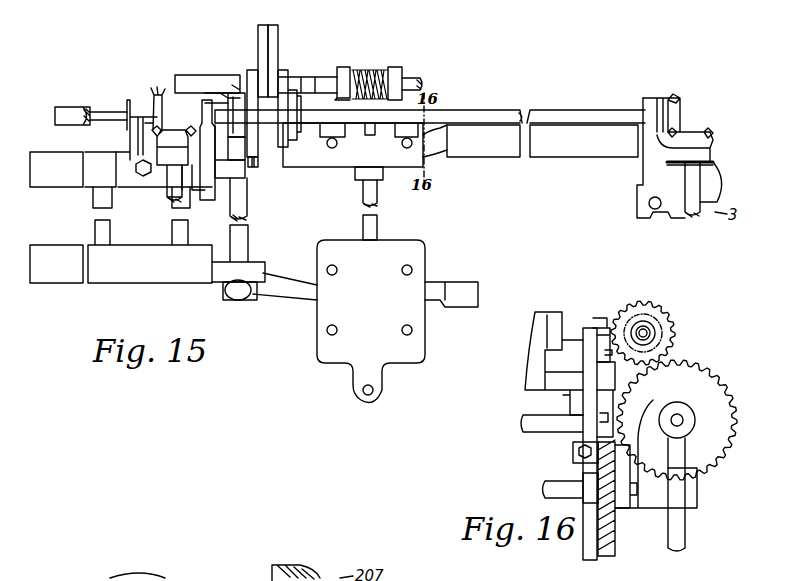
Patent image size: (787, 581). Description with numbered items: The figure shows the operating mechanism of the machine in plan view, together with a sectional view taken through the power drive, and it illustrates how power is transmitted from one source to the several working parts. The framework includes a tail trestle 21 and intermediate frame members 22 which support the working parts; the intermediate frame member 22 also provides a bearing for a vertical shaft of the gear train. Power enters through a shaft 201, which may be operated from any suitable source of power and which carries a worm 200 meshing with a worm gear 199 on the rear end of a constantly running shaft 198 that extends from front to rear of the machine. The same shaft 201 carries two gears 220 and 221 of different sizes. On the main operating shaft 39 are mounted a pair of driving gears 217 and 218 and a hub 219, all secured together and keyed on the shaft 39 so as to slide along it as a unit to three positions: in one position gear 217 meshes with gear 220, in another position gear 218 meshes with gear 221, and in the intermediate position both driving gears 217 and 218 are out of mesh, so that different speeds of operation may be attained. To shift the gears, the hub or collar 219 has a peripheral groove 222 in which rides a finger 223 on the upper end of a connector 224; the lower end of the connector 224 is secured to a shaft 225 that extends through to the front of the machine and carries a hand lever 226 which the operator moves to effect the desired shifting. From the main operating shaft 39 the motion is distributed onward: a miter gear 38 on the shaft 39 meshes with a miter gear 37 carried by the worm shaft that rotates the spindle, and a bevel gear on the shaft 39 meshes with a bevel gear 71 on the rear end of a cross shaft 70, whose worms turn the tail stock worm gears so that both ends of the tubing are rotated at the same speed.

In FIG. 15, the tail trestle 21 is at (135, 280).
In FIG. 15, the intermediate frame member 22 is at (425, 348).
In FIG. 15, the miter gear 37 is at (713, 133).
In FIG. 15, the miter gear 38 is at (676, 99).
In FIG. 15, the main operating shaft 39 is at (481, 112).
In FIG. 15, the cross shaft 70 is at (167, 196).
In FIG. 15, the bevel gear 71 is at (165, 138).
In FIG. 15, the constantly running shaft 198 is at (363, 190).
In FIG. 16, the constantly running shaft 198 is at (563, 481).
In FIG. 15, the worm gear 199 is at (421, 85).
In FIG. 16, the worm gear 199 is at (688, 526).
In FIG. 15, the worm 200 is at (366, 68).
In FIG. 15, the shaft 201 is at (306, 76).
In FIG. 16, the shaft 201 is at (646, 333).
In FIG. 15, the driving gear 217 is at (253, 166).
In FIG. 15, the driving gear 218 is at (283, 152).
In FIG. 16, the driving gear 218 is at (664, 306).
In FIG. 15, the hub 219 is at (192, 84).
In FIG. 15, the gear 220 is at (262, 44).
In FIG. 15, the gear 221 is at (280, 45).
In FIG. 16, the gear 221 is at (713, 373).
In FIG. 15, the peripheral groove 222 is at (236, 88).
In FIG. 15, the finger 223 is at (243, 152).
In FIG. 16, the finger 223 is at (602, 318).
In FIG. 15, the connector 224 is at (233, 186).
In FIG. 16, the connector 224 is at (590, 326).
In FIG. 15, the shaft 225 is at (249, 207).
In FIG. 16, the shaft 225 is at (524, 412).
In FIG. 15, the hand lever 226 is at (236, 291).